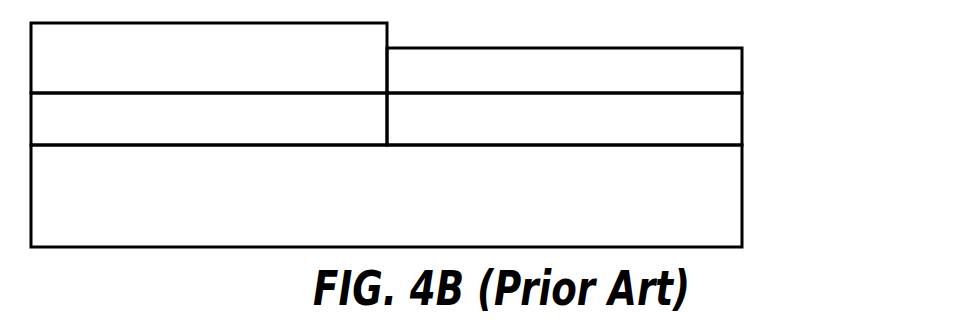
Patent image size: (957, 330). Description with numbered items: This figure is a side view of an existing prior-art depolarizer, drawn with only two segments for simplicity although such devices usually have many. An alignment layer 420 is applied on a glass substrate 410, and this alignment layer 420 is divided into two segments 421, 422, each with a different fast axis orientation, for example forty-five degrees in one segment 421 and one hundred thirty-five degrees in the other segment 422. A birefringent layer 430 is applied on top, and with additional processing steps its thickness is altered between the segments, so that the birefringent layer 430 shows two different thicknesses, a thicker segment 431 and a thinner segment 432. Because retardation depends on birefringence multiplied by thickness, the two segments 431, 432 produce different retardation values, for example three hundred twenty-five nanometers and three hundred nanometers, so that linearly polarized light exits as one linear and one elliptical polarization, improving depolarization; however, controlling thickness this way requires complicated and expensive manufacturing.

The glass substrate 410 is at (744, 205).
The alignment layer 420 is at (434, 107).
The segment 421 is at (248, 131).
The segment 422 is at (598, 137).
The birefringent layer 430 is at (434, 54).
The segment 431 is at (248, 77).
The segment 432 is at (598, 87).